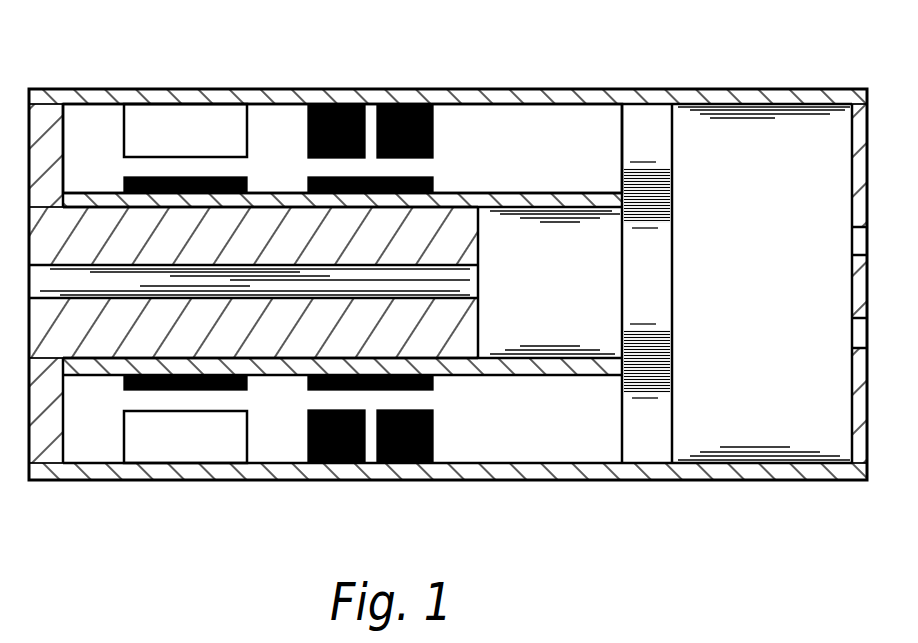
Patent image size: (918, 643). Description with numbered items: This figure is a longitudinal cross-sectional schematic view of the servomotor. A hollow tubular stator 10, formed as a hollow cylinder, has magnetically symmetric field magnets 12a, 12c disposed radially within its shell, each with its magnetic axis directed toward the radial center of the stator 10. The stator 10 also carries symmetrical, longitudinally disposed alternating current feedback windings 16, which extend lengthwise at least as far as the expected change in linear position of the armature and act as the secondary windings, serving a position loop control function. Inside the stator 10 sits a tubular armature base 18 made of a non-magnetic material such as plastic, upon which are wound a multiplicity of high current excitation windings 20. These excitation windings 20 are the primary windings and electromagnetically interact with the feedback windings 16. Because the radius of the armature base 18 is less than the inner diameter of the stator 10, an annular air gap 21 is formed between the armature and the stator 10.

The hollow tubular stator 10 is at (812, 58).
The field magnet 12a is at (237, 115).
The field magnet 12c is at (153, 447).
The alternating current feedback winding 16 is at (352, 112).
The tubular armature base 18 is at (460, 224).
The excitation winding 20 is at (418, 178).
The air gap 21 is at (148, 167).